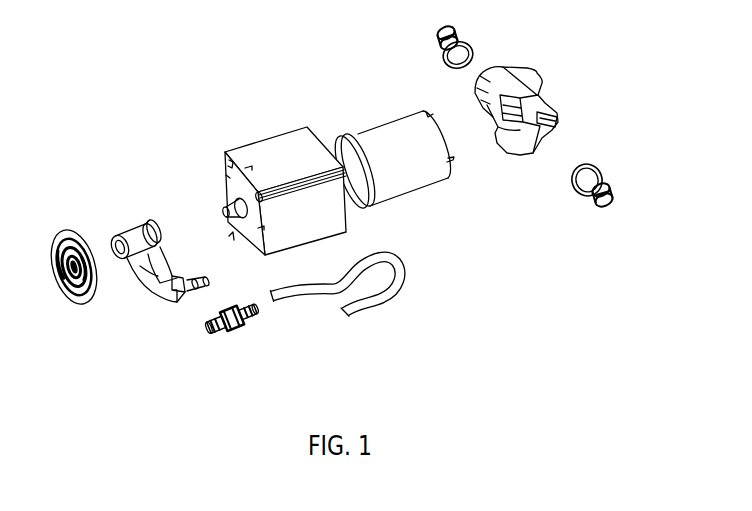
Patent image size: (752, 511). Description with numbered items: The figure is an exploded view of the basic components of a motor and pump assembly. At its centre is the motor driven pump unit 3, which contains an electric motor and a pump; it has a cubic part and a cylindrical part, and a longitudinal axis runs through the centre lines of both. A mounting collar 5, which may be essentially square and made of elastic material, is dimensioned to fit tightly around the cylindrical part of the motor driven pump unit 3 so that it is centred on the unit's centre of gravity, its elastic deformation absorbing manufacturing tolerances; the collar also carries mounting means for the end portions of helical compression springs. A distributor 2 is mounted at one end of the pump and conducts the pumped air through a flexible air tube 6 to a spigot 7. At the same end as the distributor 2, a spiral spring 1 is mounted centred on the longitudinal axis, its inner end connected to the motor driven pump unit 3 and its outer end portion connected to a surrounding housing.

The spiral spring 1 is at (60, 228).
The distributor 2 is at (140, 227).
The motor driven pump unit 3 is at (273, 145).
The mounting collar 5 is at (508, 157).
The flexible air tube 6 is at (393, 293).
The spigot 7 is at (240, 332).